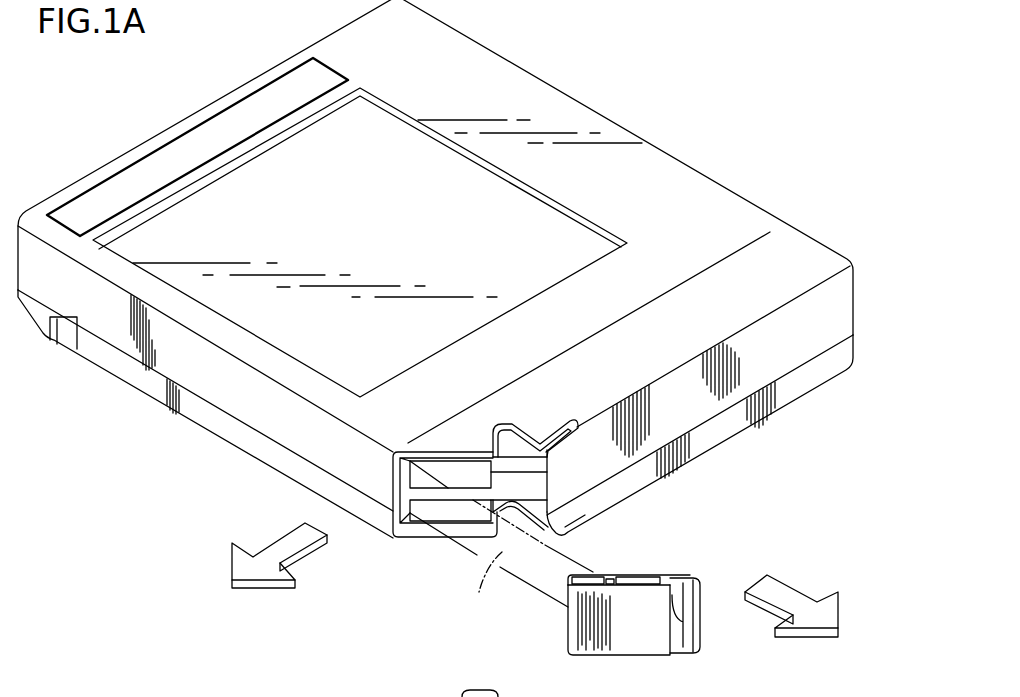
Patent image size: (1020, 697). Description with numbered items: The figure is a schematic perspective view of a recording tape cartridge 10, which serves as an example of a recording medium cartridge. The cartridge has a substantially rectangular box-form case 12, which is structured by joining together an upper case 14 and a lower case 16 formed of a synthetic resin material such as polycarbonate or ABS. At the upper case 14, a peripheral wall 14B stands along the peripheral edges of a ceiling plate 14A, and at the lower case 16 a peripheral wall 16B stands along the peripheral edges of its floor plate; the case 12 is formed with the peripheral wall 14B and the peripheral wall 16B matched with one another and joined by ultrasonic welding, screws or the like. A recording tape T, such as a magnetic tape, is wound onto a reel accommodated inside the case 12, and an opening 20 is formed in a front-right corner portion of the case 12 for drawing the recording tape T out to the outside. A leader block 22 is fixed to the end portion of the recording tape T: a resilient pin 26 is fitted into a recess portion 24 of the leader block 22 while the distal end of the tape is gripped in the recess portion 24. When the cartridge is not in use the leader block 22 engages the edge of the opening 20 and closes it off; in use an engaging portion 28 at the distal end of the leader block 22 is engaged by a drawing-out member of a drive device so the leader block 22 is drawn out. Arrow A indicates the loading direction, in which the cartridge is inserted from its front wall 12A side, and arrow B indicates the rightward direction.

The recording tape cartridge 10 is at (670, 92).
The case 12 is at (702, 158).
The front wall 12A is at (708, 437).
The upper case 14 is at (855, 302).
The ceiling plate 14A is at (513, 90).
The peripheral wall 14B is at (268, 414).
The lower case 16 is at (855, 342).
The peripheral wall 16B is at (305, 472).
The opening 20 is at (436, 552).
The leader block 22 is at (647, 632).
The recess portion 24 is at (615, 576).
The resilient pin 26 is at (612, 575).
The engaging portion 28 is at (680, 600).
The arrow A is at (783, 595).
The arrow B is at (280, 547).
The recording tape T is at (509, 565).